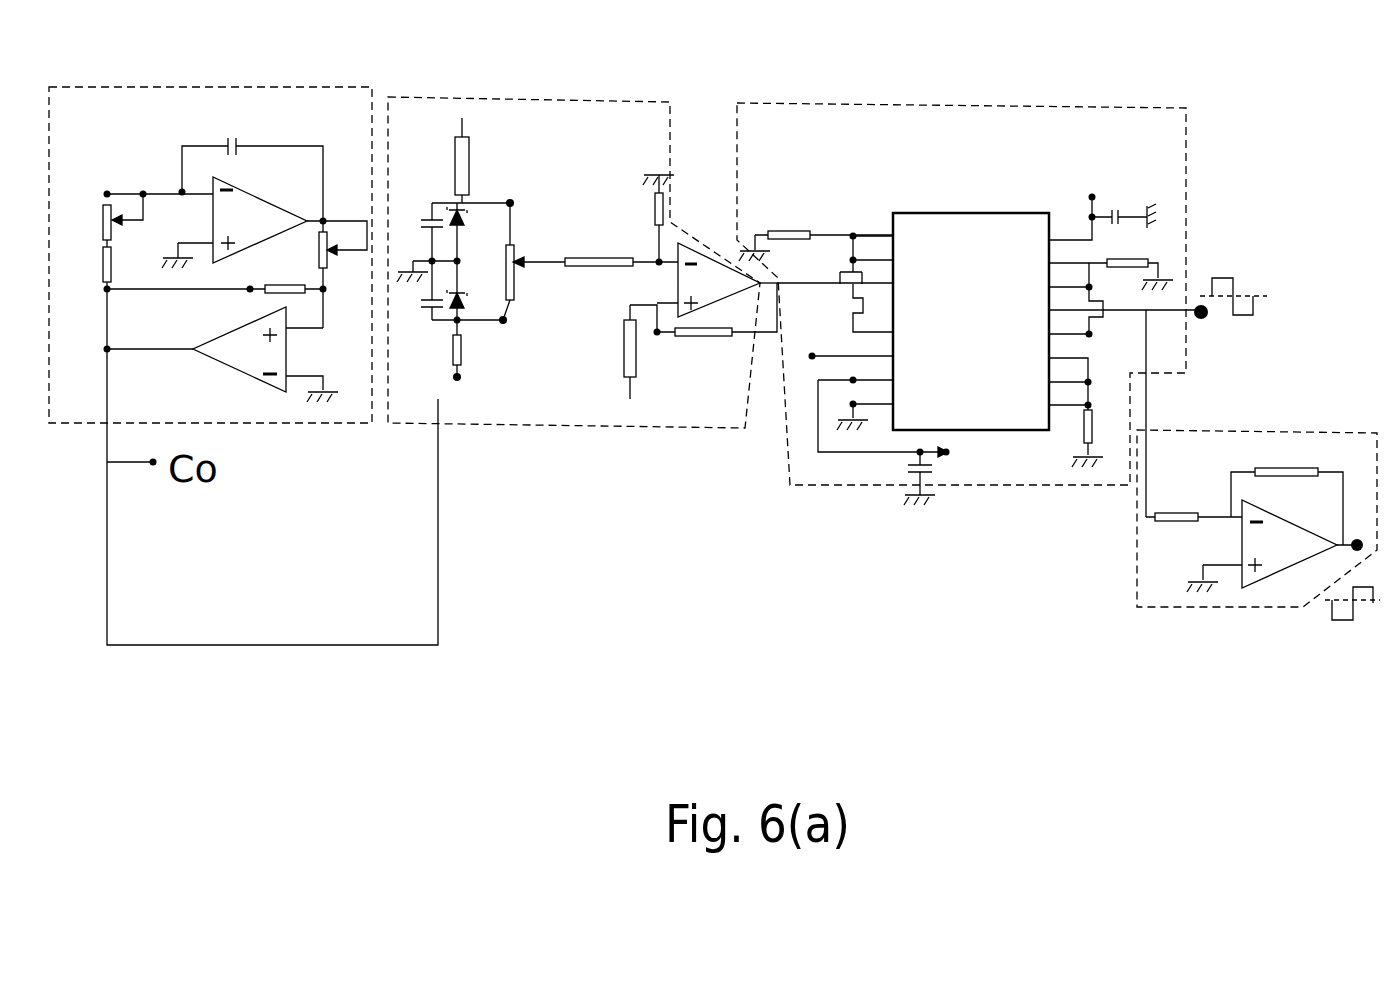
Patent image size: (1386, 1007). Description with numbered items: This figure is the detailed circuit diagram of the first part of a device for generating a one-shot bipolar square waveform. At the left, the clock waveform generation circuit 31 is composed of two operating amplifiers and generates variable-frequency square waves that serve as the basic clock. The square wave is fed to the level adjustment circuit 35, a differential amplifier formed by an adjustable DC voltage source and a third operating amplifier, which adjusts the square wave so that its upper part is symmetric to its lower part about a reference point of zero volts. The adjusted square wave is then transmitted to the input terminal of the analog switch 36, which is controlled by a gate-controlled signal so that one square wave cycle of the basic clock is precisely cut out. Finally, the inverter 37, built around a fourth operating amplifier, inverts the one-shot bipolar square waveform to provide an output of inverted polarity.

The clock waveform generation circuit 31 is at (143, 118).
The level adjustment circuit 35 is at (533, 127).
The analog switch 36 is at (900, 142).
The inverter 37 is at (1162, 578).